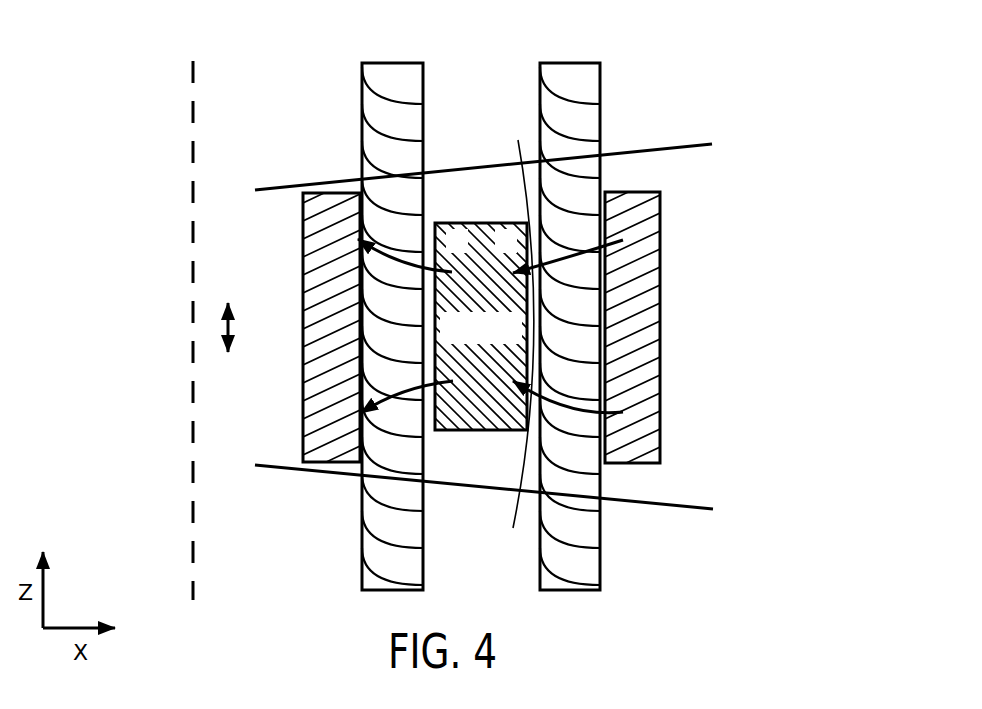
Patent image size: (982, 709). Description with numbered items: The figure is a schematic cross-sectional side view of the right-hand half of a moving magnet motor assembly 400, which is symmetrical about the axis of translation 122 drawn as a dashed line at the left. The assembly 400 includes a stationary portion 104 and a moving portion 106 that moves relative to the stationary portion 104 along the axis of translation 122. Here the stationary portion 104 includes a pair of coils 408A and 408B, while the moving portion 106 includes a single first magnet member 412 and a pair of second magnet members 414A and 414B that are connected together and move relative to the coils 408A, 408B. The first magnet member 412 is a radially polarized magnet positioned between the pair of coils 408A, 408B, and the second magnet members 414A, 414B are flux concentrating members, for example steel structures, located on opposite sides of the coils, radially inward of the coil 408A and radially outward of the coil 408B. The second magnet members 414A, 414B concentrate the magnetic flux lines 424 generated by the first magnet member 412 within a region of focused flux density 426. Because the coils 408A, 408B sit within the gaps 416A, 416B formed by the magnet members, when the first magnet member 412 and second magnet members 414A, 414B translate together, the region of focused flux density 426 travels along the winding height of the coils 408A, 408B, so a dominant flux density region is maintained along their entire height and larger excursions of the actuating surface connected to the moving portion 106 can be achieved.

The assembly 400 is at (783, 53).
The stationary portion 104 is at (623, 88).
The moving portion 106 is at (690, 255).
The axis of translation 122 is at (195, 108).
The coil 408A is at (396, 63).
The coil 408B is at (574, 63).
The first magnet member 412 is at (473, 222).
The second magnet member 414A is at (339, 192).
The second magnet member 414B is at (634, 192).
The gap 416A is at (444, 432).
The gap 416B is at (607, 472).
The magnetic flux lines 424 is at (514, 338).
The region of concentrated or focused flux density 426 is at (682, 512).